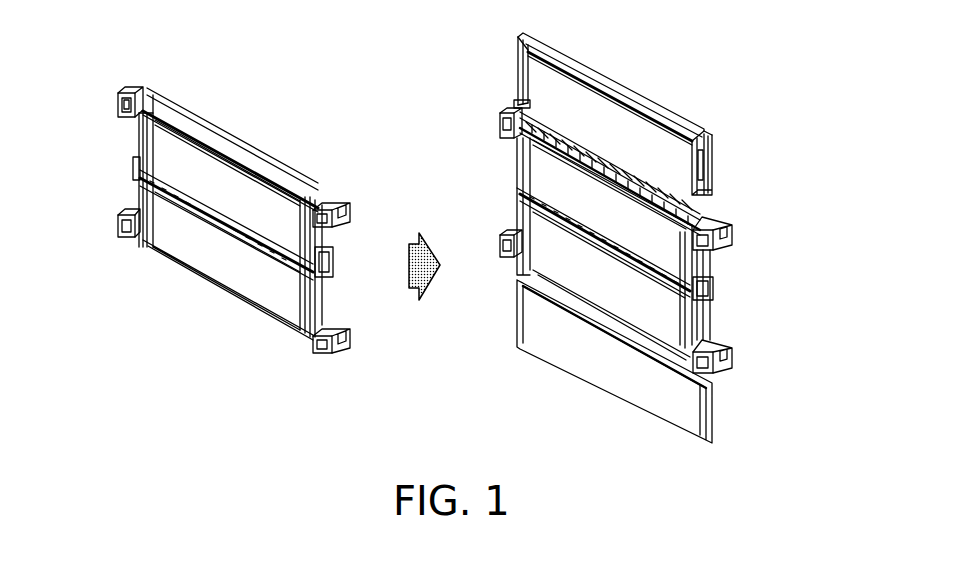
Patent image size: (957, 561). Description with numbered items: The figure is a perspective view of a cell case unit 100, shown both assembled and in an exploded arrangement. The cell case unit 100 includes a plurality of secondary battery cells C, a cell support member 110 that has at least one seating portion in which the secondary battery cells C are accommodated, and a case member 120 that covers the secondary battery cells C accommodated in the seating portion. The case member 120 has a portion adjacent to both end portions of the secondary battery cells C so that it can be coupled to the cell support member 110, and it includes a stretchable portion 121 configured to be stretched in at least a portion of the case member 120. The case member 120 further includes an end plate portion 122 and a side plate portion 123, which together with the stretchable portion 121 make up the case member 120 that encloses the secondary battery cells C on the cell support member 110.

The cell case unit 100 is at (133, 193).
The cell support member 110 is at (700, 203).
The case member 120 is at (671, 114).
The stretchable portion 121 is at (681, 128).
The end plate portion 122 is at (676, 117).
The side plate portion 123 is at (698, 170).
The secondary battery cells C is at (667, 248).